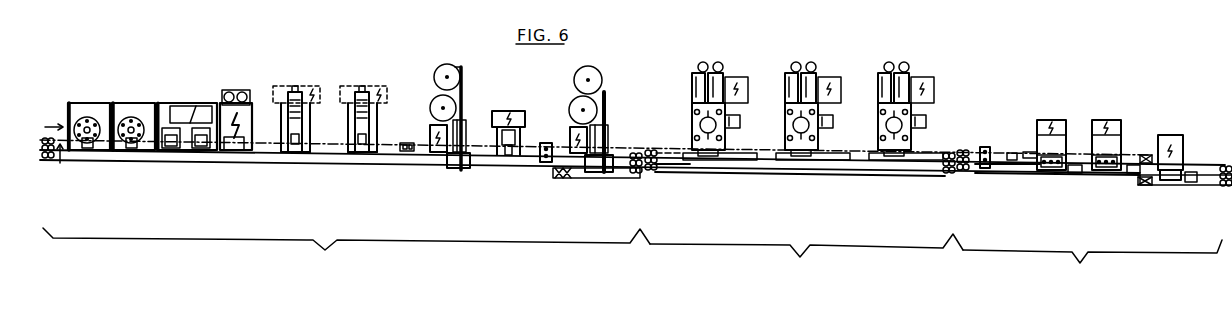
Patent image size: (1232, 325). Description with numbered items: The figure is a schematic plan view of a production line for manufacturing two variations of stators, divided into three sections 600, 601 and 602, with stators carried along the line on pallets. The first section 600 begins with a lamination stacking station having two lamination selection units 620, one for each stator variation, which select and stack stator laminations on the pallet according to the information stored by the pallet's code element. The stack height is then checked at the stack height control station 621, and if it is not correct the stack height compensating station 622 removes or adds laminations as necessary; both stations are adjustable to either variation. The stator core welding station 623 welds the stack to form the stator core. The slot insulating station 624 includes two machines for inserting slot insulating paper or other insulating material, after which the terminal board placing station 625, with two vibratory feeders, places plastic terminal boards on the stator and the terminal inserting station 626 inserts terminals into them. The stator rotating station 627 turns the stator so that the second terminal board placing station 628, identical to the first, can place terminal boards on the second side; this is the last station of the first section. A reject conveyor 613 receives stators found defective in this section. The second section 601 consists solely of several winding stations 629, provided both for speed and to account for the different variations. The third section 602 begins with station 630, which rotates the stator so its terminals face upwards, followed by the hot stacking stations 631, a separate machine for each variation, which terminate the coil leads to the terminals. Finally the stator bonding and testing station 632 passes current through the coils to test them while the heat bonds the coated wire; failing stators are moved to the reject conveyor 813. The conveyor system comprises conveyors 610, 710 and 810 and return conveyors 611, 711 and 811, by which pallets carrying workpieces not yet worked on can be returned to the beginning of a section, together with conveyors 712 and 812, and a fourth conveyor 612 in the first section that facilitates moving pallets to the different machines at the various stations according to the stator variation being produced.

The first section 600 is at (346, 250).
The second section 601 is at (806, 257).
The third section 602 is at (1092, 262).
The conveyor 610 is at (261, 154).
The return conveyor 611 is at (285, 163).
The fourth conveyor 612 is at (268, 141).
The reject conveyor 613 is at (570, 178).
The lamination selection unit 620 is at (90, 148).
The stack height control station 621 is at (176, 148).
The stack height compensating station 622 is at (207, 148).
The stator core welding station 623 is at (232, 150).
The slot insulating station 624 is at (298, 152).
The terminal board placing station 625 is at (457, 170).
The terminal inserting station 626 is at (507, 155).
The stator rotating station 627 is at (547, 162).
The second terminal board placing station 628 is at (595, 168).
The winding station 629 is at (713, 156).
The stator rotating station 630 is at (986, 168).
The hot stacking station 631 is at (1053, 166).
The stator bonding and testing station 632 is at (1170, 180).
The conveyor 710 is at (665, 163).
The return conveyor 711 is at (683, 169).
The conveyor 712 is at (662, 152).
The conveyor 810 is at (1000, 162).
The return conveyor 811 is at (1007, 173).
The conveyor 812 is at (1133, 154).
The reject conveyor 813 is at (1207, 185).